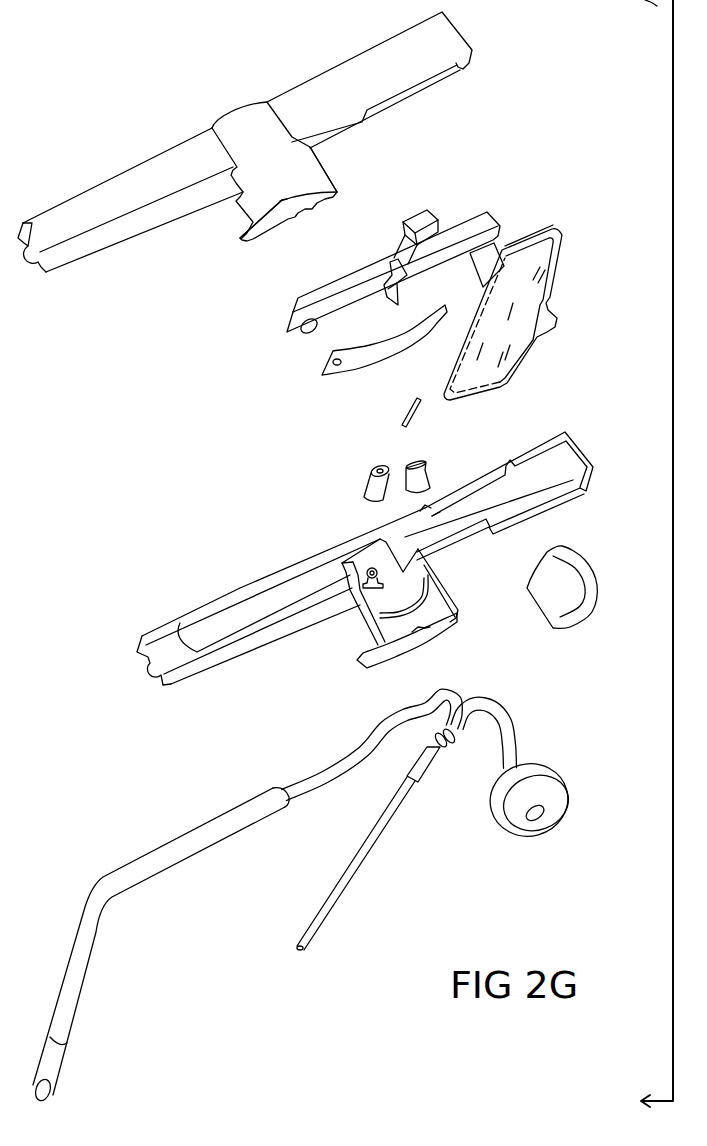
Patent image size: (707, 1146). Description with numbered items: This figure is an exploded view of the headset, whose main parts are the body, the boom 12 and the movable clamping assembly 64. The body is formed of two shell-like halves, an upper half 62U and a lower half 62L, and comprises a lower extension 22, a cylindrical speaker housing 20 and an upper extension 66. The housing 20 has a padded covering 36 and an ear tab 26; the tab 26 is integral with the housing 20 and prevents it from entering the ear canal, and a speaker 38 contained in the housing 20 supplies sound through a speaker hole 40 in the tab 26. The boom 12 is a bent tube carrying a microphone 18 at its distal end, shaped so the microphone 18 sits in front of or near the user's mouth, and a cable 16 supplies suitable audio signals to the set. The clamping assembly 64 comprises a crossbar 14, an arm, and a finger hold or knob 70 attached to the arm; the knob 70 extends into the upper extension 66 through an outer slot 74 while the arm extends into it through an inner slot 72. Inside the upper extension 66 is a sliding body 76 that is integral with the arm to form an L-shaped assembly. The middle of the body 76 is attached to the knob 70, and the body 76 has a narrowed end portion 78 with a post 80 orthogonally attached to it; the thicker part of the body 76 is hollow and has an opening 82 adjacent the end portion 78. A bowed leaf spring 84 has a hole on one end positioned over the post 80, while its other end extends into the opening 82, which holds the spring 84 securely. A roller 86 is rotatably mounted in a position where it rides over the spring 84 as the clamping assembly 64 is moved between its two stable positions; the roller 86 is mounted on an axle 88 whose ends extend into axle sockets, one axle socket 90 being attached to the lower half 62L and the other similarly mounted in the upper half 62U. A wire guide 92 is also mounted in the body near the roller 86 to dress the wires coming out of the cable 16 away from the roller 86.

The boom 12 is at (158, 863).
The crossbar 14 is at (543, 307).
The cable 16 is at (318, 915).
The microphone 18 is at (55, 1058).
The speaker housing 20 is at (315, 172).
The lower extension 22 is at (107, 190).
The ear tab 26 is at (240, 240).
The padded covering 36 is at (580, 568).
The speaker 38 is at (547, 780).
The speaker hole 40 is at (420, 633).
The upper half 62U is at (235, 123).
The lower half 62L is at (278, 630).
The movable clamping assembly 64 is at (508, 246).
The upper extension 66 is at (348, 72).
The knob 70 is at (427, 213).
The inner slot 72 is at (403, 95).
The outer slot 74 is at (485, 483).
The sliding body 76 is at (478, 220).
The narrowed end portion 78 is at (335, 298).
The post 80 is at (295, 333).
The opening 82 is at (390, 273).
The bowed leaf spring 84 is at (363, 355).
The roller 86 is at (373, 483).
The axle 88 is at (402, 417).
The axle socket 90 is at (363, 570).
The wire guide 92 is at (436, 476).